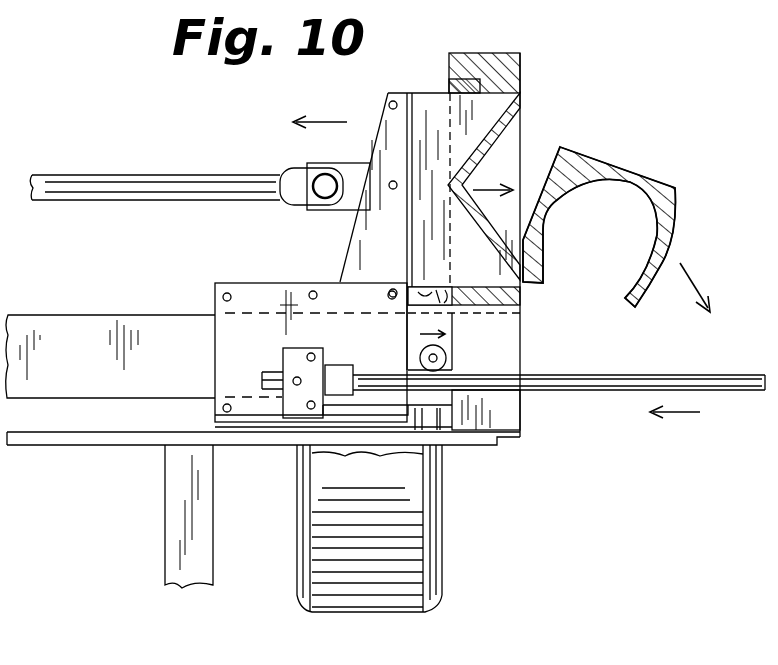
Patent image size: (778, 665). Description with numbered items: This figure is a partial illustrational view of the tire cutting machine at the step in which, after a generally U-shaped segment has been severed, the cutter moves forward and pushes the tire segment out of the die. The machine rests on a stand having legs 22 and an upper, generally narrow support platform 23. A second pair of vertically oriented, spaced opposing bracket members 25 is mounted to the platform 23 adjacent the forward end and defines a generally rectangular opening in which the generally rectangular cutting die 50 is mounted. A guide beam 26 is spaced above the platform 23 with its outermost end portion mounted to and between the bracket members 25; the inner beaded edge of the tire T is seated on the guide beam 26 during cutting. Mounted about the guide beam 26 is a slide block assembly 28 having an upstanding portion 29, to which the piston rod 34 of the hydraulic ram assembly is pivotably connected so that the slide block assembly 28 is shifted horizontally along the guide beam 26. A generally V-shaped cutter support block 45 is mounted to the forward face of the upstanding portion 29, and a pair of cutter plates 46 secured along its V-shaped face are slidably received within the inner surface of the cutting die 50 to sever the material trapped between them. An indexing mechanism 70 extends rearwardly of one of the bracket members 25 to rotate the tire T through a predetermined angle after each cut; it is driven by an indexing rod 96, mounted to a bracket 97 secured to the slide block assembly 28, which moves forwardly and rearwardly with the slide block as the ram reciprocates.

The legs 22 is at (170, 548).
The support platform 23 is at (40, 447).
The bracket members 25 is at (518, 64).
The guide beam 26 is at (78, 276).
The slide block assembly 28 is at (245, 282).
The upstanding portion 29 is at (352, 226).
The piston rod 34 is at (124, 130).
The cutter support block 45 is at (420, 246).
The cutter plates 46 is at (487, 160).
The cutting die 50 is at (449, 86).
The indexing mechanism 70 is at (395, 353).
The indexing rod 96 is at (608, 345).
The bracket 97 is at (283, 352).
The tire T is at (423, 530).